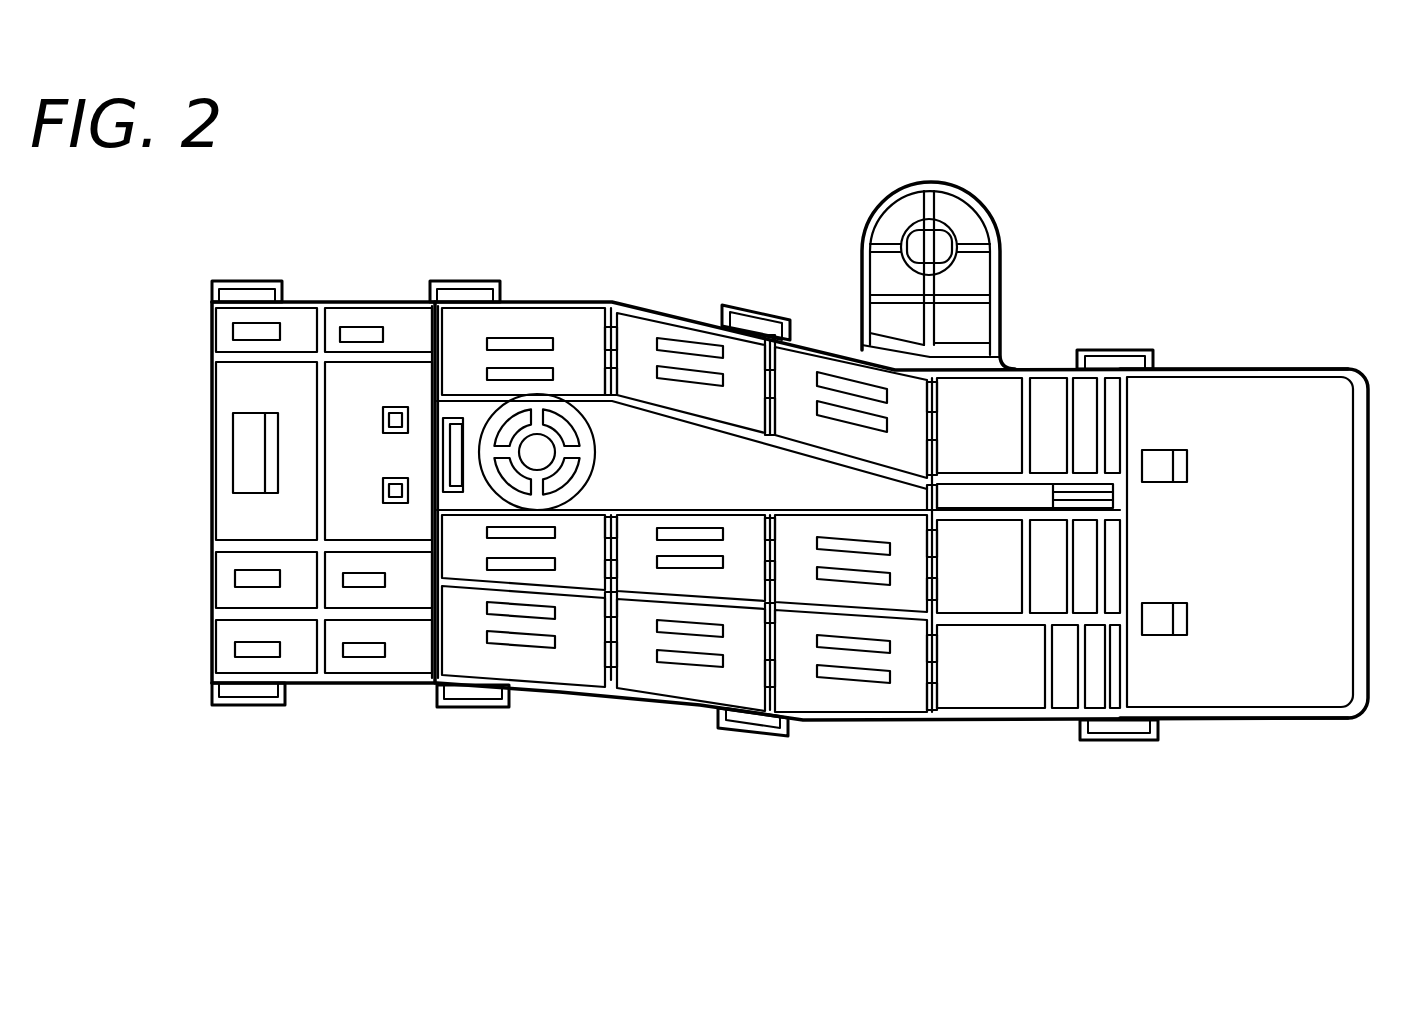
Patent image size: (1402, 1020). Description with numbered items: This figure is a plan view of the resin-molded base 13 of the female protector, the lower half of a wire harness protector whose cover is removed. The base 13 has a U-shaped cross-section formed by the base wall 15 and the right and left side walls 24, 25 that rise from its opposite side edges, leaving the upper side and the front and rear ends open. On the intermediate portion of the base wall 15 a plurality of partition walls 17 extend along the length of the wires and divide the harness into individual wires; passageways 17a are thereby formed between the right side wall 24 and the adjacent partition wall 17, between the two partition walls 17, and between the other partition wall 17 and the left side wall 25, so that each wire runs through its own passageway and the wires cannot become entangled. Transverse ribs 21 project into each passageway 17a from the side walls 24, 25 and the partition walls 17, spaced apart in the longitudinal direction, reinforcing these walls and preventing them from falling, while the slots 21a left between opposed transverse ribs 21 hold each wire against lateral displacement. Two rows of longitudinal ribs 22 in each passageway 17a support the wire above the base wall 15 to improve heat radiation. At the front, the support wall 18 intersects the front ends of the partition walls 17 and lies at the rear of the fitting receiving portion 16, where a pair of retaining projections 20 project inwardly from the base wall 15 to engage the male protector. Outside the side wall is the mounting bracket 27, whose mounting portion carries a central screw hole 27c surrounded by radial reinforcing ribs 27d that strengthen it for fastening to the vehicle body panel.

The base 13 is at (632, 290).
The base wall 15 is at (640, 645).
The fitting receiving portion 16 is at (258, 393).
The partition wall 17 is at (690, 410).
The passageway 17a is at (460, 322).
The support wall 18 is at (430, 342).
The retaining projection 20 is at (382, 418).
The transverse rib 21 is at (573, 352).
The slot 21a is at (617, 357).
The longitudinal rib 22 is at (513, 377).
The right side wall 24 is at (1008, 727).
The left side wall 25 is at (1267, 365).
The mounting bracket 27 is at (915, 185).
The screw hole 27c is at (950, 242).
The reinforcing rib 27d is at (888, 228).